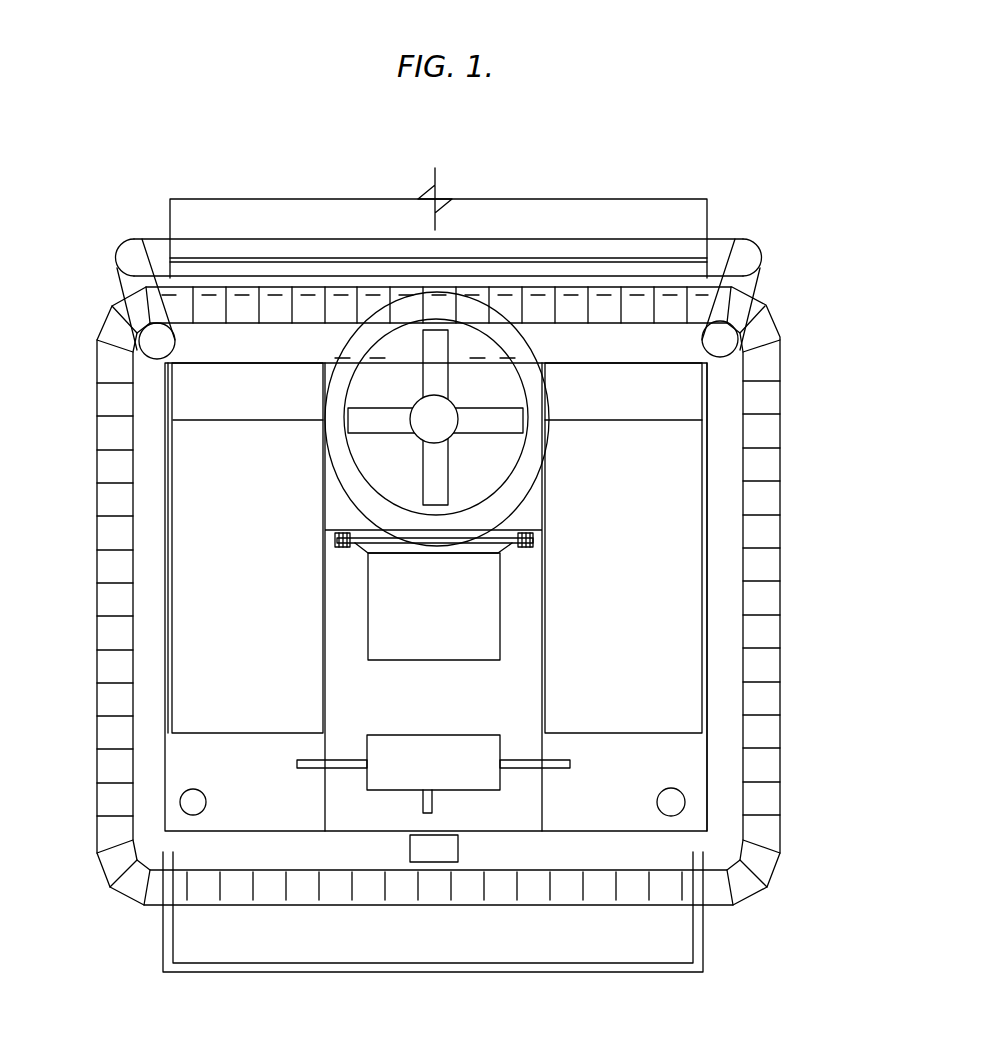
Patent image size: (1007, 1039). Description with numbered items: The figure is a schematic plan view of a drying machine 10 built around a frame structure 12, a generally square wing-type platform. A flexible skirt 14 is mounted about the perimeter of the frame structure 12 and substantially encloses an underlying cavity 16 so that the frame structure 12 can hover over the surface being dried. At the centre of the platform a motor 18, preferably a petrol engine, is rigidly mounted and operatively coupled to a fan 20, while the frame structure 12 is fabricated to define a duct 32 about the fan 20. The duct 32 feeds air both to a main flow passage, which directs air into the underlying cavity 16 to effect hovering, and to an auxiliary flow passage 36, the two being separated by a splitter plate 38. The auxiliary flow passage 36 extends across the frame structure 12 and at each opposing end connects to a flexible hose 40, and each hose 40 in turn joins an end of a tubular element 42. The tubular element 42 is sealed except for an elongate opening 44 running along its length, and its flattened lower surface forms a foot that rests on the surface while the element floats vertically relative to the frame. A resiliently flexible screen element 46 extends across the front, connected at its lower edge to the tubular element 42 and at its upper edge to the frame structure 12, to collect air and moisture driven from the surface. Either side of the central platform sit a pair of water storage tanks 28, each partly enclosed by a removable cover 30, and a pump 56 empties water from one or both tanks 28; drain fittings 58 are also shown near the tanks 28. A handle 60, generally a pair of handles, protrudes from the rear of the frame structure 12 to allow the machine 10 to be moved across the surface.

The drying machine 10 is at (766, 158).
The frame structure 12 is at (722, 645).
The flexible skirt 14 is at (112, 401).
The underlying cavity 16 is at (242, 542).
The motor 18 is at (434, 596).
The fan 20 is at (610, 417).
The water storage tank 28 is at (627, 592).
The removable cover 30 is at (706, 675).
The duct 32 is at (435, 417).
The auxiliary flow passage 36 is at (455, 417).
The splitter plate 38 is at (495, 364).
The flexible hose 40 is at (733, 308).
The tubular element 42 is at (162, 262).
The elongate opening 44 is at (592, 256).
The screen element 46 is at (328, 200).
The pump 56 is at (433, 798).
The mounting holes 58 is at (677, 803).
The handle 60 is at (704, 940).